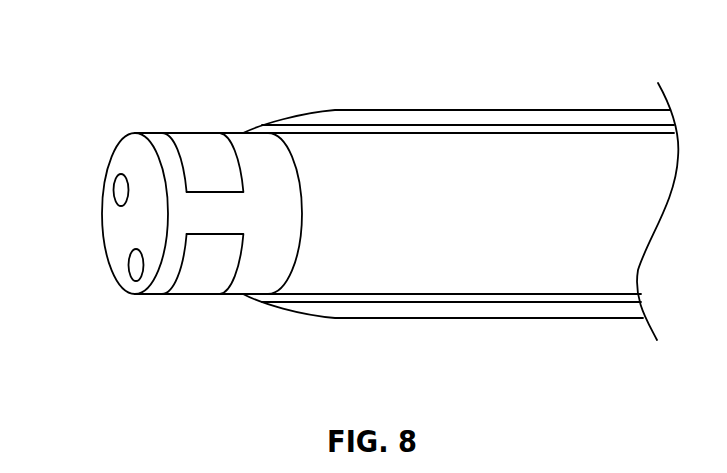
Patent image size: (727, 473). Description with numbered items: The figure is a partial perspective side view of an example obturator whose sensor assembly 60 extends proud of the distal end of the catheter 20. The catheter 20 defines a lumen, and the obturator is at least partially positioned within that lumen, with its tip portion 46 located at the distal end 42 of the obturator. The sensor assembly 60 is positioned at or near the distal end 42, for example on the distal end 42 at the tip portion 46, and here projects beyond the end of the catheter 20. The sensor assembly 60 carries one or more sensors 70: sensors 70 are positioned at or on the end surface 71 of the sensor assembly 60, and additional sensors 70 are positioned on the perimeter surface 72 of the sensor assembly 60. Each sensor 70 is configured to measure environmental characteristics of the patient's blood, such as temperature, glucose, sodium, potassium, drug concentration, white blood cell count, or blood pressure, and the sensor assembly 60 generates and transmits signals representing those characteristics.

The catheter 20 is at (487, 108).
The distal end 42 is at (561, 168).
The tip portion 46 is at (207, 348).
The sensor assembly 60 is at (222, 104).
The sensor 70 is at (198, 146).
The end surface 71 is at (122, 160).
The perimeter surface 72 is at (143, 133).